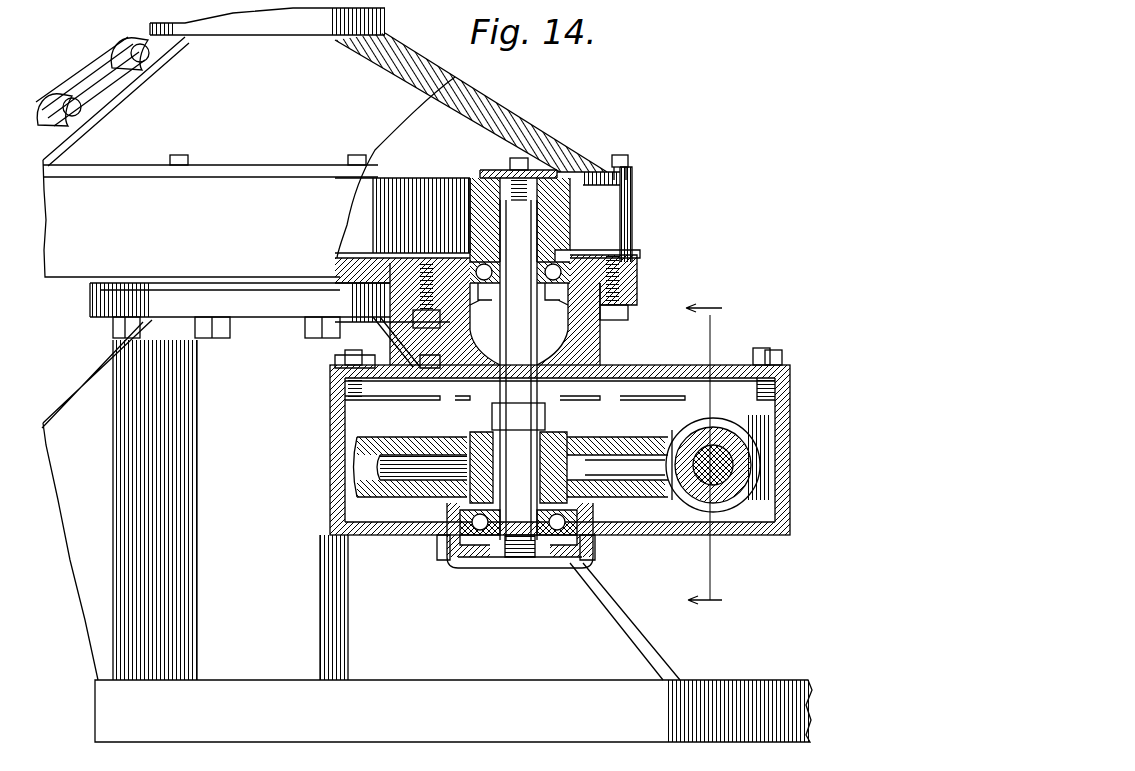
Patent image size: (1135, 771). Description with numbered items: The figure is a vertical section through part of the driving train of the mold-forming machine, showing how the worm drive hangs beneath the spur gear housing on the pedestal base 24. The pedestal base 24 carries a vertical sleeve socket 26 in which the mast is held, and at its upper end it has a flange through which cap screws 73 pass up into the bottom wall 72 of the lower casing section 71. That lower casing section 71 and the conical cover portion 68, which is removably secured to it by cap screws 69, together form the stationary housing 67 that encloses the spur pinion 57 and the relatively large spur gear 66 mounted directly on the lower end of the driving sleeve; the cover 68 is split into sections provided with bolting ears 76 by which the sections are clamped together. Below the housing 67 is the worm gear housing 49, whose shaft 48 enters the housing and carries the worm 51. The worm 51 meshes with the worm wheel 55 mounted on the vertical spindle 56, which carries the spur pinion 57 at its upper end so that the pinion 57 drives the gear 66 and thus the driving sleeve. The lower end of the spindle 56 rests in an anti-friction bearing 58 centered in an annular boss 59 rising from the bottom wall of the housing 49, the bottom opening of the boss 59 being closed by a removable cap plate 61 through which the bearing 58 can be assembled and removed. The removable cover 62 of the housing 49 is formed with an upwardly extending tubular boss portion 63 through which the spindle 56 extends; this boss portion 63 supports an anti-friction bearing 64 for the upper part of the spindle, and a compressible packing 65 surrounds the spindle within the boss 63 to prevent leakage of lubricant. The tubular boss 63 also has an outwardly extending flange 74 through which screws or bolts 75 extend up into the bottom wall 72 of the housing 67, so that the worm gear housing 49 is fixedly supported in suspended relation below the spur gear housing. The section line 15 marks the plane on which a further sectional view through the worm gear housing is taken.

The section line 15- 15 is at (704, 454).
The pedestal base 24 is at (773, 682).
The vertical sleeve socket 26 is at (100, 320).
The shaft 48 is at (770, 456).
The worm gear housing 49 is at (783, 538).
The worm 51 is at (740, 440).
The worm wheel 55 is at (650, 507).
The vertical spindle 56 is at (495, 421).
The spur pinion 57 is at (572, 222).
The anti-friction bearing 58 is at (552, 567).
The annular boss 59 is at (575, 567).
The removable cap plate 61 is at (532, 568).
The removable cover 62 is at (724, 368).
The tubular boss portion 63 is at (600, 356).
The anti-friction bearing 64 is at (612, 266).
The compressible packing 65 is at (640, 292).
The spur gear 66 is at (422, 184).
The stationary housing 67 is at (646, 183).
The conical cover portion 68 is at (547, 128).
The cap screws 69 is at (621, 160).
The lower casing section 71 is at (633, 250).
The bottom wall 72 is at (357, 282).
The cap screws 73 is at (225, 340).
The flange 74 is at (630, 306).
The screws or bolts 75 is at (412, 322).
The bolting ears 76 is at (108, 44).